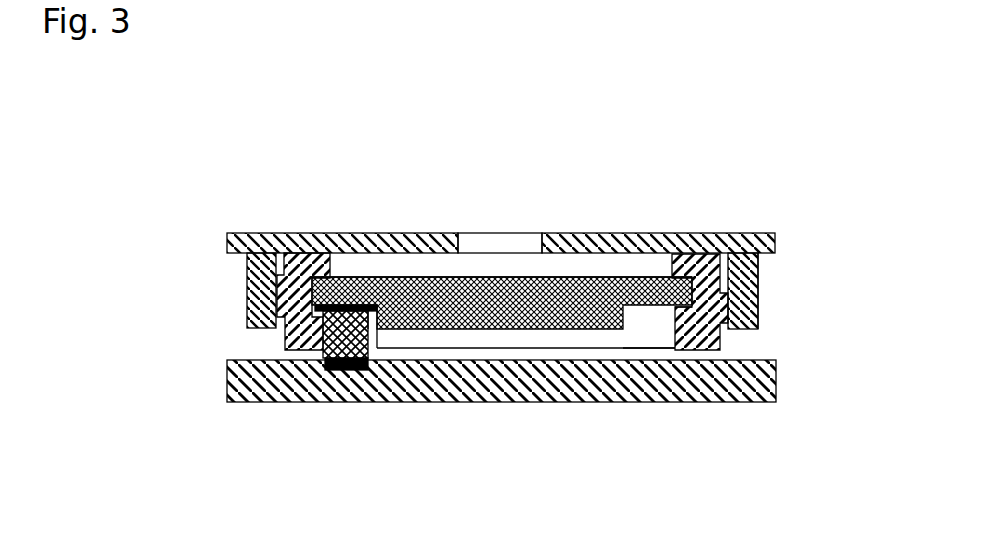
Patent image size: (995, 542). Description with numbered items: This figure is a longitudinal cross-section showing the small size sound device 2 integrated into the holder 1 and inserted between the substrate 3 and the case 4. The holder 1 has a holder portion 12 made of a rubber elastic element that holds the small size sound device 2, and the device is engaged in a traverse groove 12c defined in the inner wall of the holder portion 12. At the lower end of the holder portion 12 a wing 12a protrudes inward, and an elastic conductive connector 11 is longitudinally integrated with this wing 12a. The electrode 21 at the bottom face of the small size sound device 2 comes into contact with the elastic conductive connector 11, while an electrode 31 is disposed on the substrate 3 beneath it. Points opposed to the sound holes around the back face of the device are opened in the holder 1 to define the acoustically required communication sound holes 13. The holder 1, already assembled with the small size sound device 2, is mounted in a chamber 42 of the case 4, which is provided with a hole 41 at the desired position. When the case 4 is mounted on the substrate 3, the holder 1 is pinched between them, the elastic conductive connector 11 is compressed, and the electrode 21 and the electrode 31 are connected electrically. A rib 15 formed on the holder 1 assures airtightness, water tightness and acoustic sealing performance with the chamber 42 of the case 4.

The holder 1 is at (253, 345).
The small size sound device 2 is at (603, 258).
The electrode 21 is at (357, 277).
The substrate 3 is at (227, 388).
The electrode 31 is at (337, 370).
The case 4 is at (569, 241).
The hole 41 is at (480, 240).
The chamber 42 is at (762, 278).
The elastic conductive connector 11 is at (325, 342).
The holder portion 12 is at (295, 263).
The wing 12a is at (383, 338).
The traverse groove 12c is at (667, 308).
The communication sound holes 13 is at (643, 336).
The rib 15 is at (740, 333).